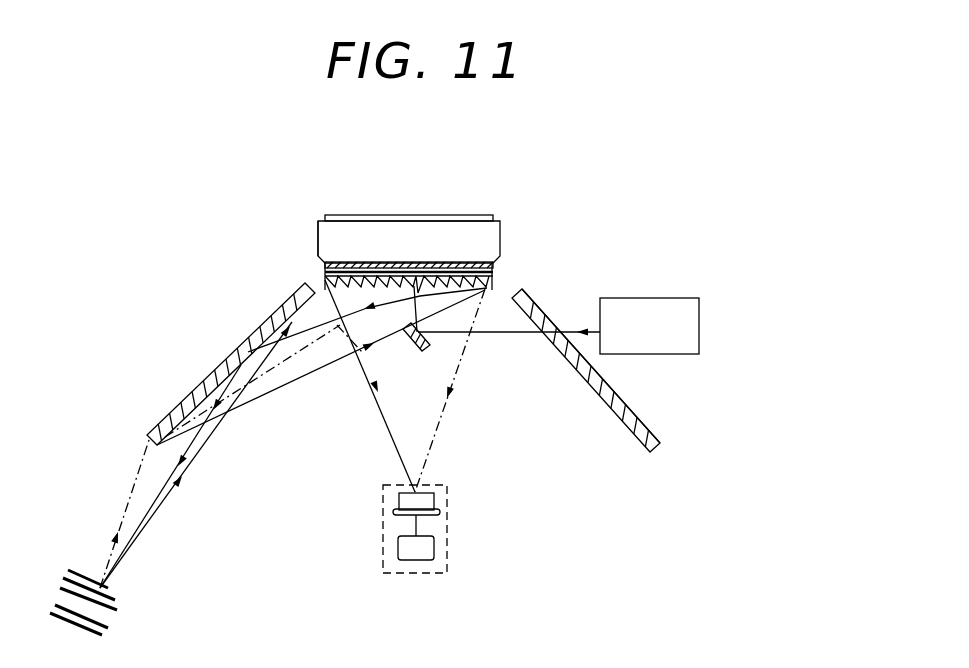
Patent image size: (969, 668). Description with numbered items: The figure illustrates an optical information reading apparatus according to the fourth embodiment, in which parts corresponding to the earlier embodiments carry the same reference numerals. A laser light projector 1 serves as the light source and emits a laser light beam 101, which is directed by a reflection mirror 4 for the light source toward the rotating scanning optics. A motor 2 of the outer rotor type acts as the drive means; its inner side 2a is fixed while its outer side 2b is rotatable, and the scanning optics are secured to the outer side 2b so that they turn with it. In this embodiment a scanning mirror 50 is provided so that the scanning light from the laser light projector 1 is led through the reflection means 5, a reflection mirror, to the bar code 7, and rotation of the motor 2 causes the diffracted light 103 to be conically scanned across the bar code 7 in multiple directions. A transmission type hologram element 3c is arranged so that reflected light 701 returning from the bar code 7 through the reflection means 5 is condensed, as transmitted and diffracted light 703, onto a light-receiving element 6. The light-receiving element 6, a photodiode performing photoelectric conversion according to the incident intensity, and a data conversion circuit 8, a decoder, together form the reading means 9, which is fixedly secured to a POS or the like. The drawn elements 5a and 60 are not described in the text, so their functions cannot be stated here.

The laser light projector 1 is at (699, 300).
The motor 2 is at (447, 228).
The inner side of motor 2a is at (375, 214).
The outer side of motor 2b is at (318, 221).
The transmission type hologram element 3c is at (314, 285).
The reflection mirror for the light source 4 is at (428, 340).
The reflection means 5 is at (180, 402).
The reflecting surface of mirror 5a is at (553, 323).
The light-receiving element 6 is at (440, 512).
The bar code 7 is at (112, 588).
The data conversion circuit 8 is at (434, 550).
The reading means 9 is at (438, 575).
The scanning mirror 50 is at (413, 282).
The transparent substrate layer 60 is at (473, 261).
The laser light beam 101 is at (595, 329).
The diffracted light 103 is at (320, 300).
The reflected light 701 is at (190, 466).
The transmitted and diffracted light 703 is at (432, 449).